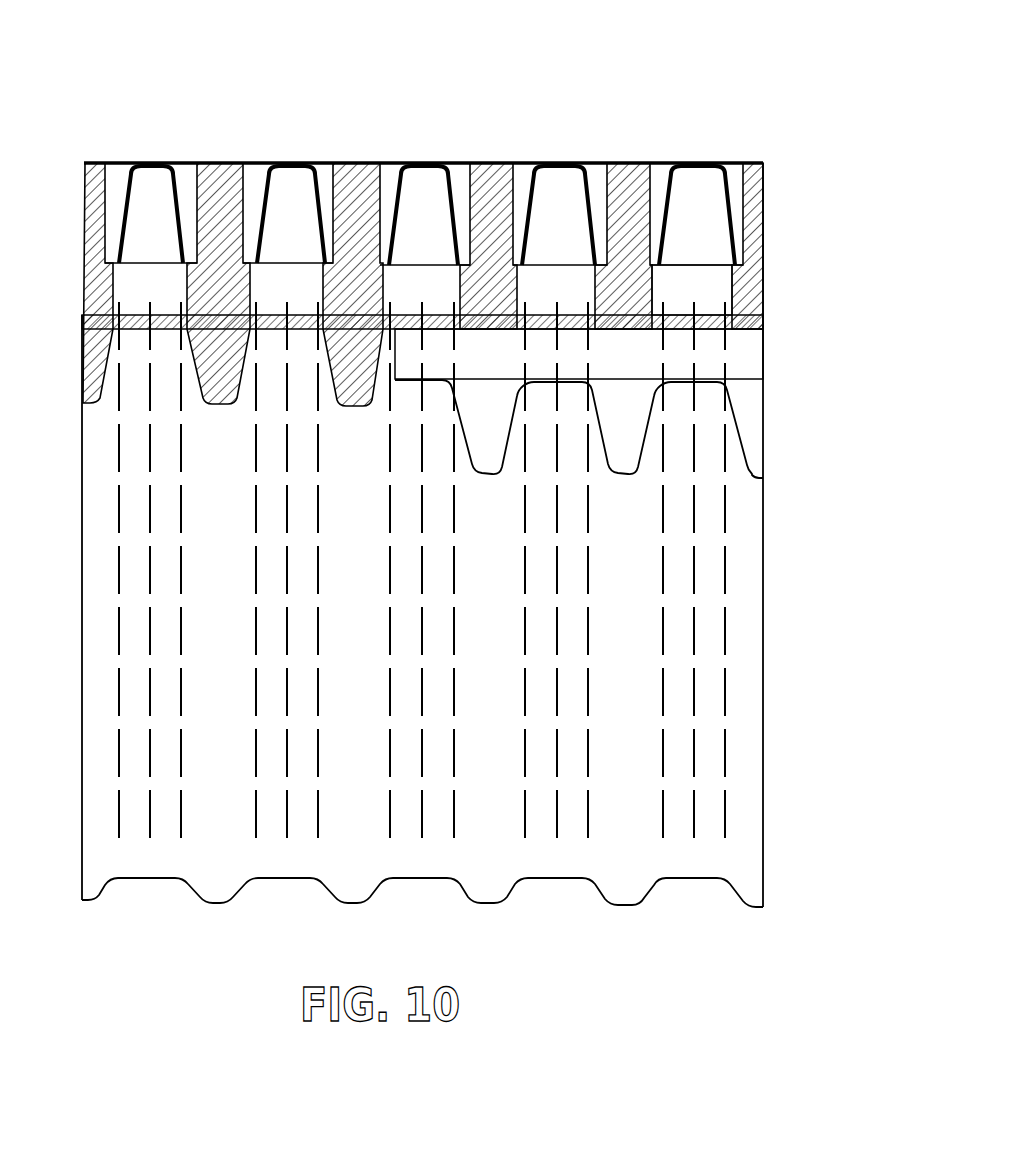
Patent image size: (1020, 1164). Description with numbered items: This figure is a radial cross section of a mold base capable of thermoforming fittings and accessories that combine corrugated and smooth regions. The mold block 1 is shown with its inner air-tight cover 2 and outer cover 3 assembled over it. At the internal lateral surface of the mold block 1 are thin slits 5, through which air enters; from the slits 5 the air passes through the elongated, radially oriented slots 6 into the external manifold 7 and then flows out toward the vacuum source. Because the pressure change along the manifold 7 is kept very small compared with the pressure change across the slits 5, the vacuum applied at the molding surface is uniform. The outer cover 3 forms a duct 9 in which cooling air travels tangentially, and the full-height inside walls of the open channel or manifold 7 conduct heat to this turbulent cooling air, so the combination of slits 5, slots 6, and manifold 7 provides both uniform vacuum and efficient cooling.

The mold block 1 is at (740, 458).
The inner air-tight cover 2 is at (732, 183).
The outer cover 3 is at (387, 163).
The slits 5 is at (695, 575).
The radial slots 6 is at (700, 297).
The manifold 7 is at (147, 187).
The duct 9 is at (313, 175).